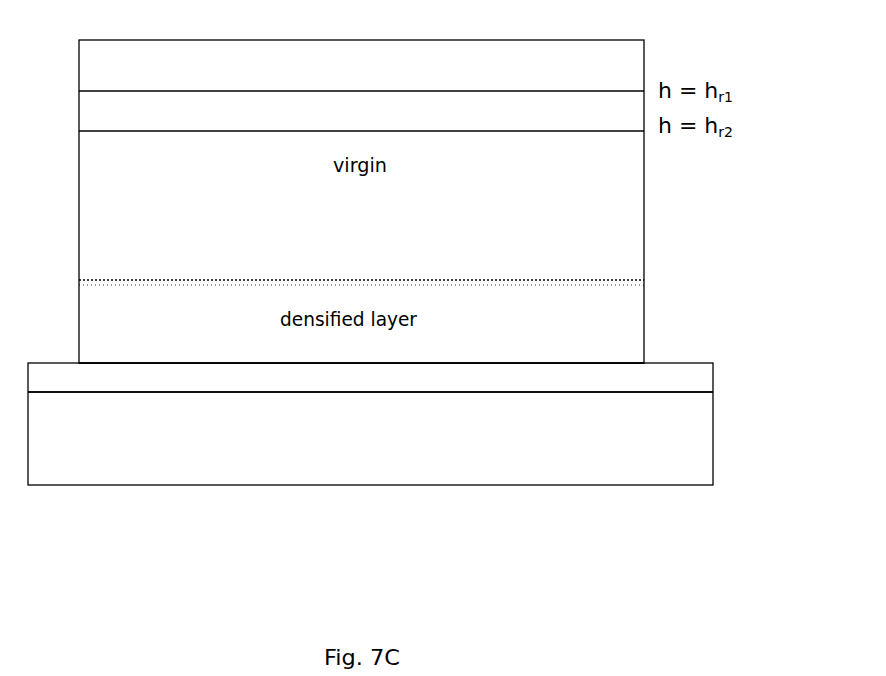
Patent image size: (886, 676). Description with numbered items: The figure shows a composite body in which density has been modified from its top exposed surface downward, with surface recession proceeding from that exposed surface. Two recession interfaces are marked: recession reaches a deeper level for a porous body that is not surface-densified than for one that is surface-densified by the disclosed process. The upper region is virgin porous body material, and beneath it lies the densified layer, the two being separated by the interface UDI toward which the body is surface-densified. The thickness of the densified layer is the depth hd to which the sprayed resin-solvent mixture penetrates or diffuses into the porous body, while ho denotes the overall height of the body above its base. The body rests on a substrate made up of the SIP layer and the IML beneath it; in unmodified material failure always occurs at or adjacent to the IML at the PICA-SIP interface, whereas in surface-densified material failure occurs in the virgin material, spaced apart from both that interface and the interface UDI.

The interface UDI is at (388, 285).
The total lens/article height ho is at (28, 363).
The depth h_d hd is at (130, 282).
The element SIP is at (734, 380).
The element IML is at (734, 397).